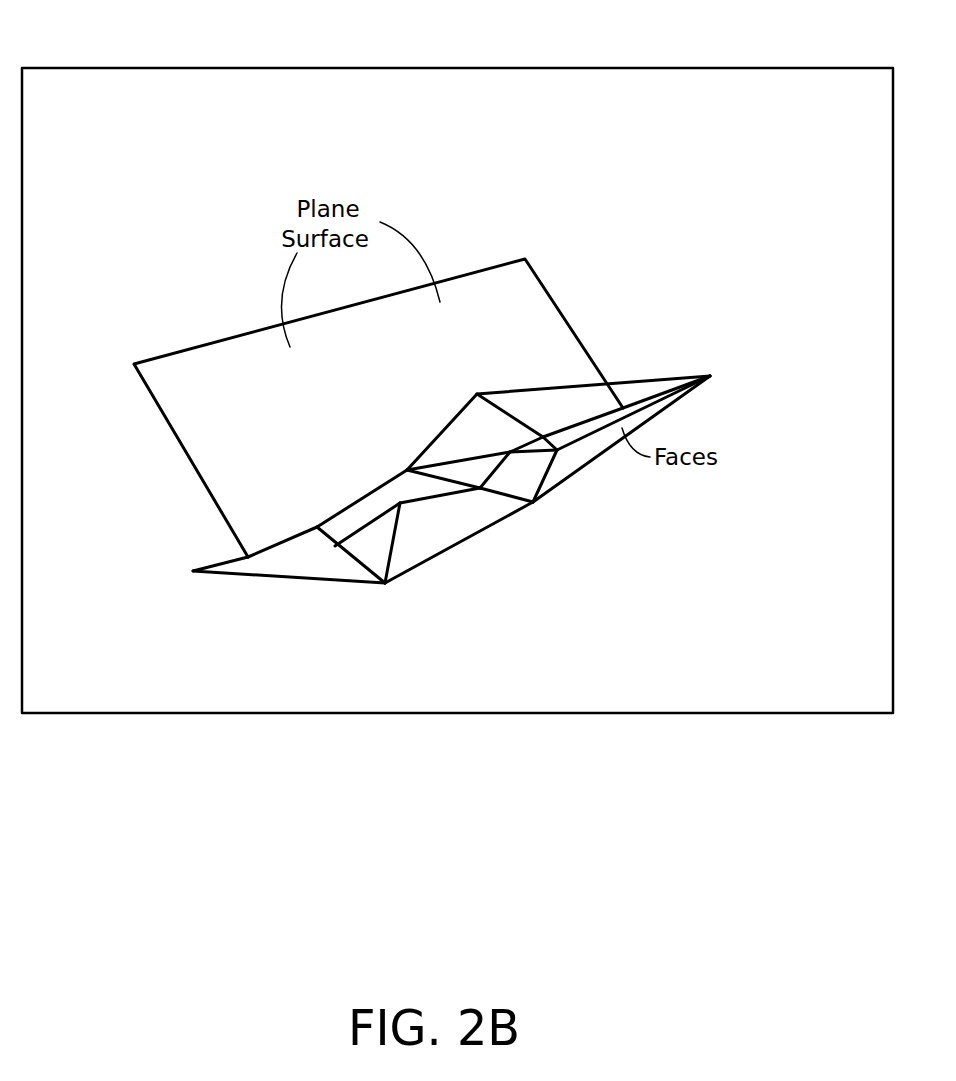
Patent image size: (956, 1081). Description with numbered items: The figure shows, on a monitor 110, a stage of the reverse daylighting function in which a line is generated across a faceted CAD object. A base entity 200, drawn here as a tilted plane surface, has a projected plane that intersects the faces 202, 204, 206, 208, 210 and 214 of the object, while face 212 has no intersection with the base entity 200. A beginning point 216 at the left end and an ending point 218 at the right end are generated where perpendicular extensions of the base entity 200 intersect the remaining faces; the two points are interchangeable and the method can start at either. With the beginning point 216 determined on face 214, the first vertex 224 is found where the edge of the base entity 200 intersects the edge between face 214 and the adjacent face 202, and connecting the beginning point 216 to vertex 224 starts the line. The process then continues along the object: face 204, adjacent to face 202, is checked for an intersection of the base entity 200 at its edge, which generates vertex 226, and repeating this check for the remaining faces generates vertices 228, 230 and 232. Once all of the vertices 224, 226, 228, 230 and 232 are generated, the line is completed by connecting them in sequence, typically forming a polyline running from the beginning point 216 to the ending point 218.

The monitor 110 is at (615, 68).
The base entity 200 is at (247, 330).
The face 202 is at (372, 586).
The face 204 is at (450, 535).
The face 206 is at (522, 478).
The face 208 is at (460, 428).
The face 210 is at (583, 397).
The face 212 is at (570, 460).
The face 214 is at (283, 567).
The beginning point 216 is at (238, 565).
The ending point 218 is at (633, 403).
The vertex 224 is at (335, 547).
The vertex 226 is at (400, 503).
The vertex 228 is at (480, 487).
The vertex 230 is at (510, 452).
The vertex 232 is at (538, 432).